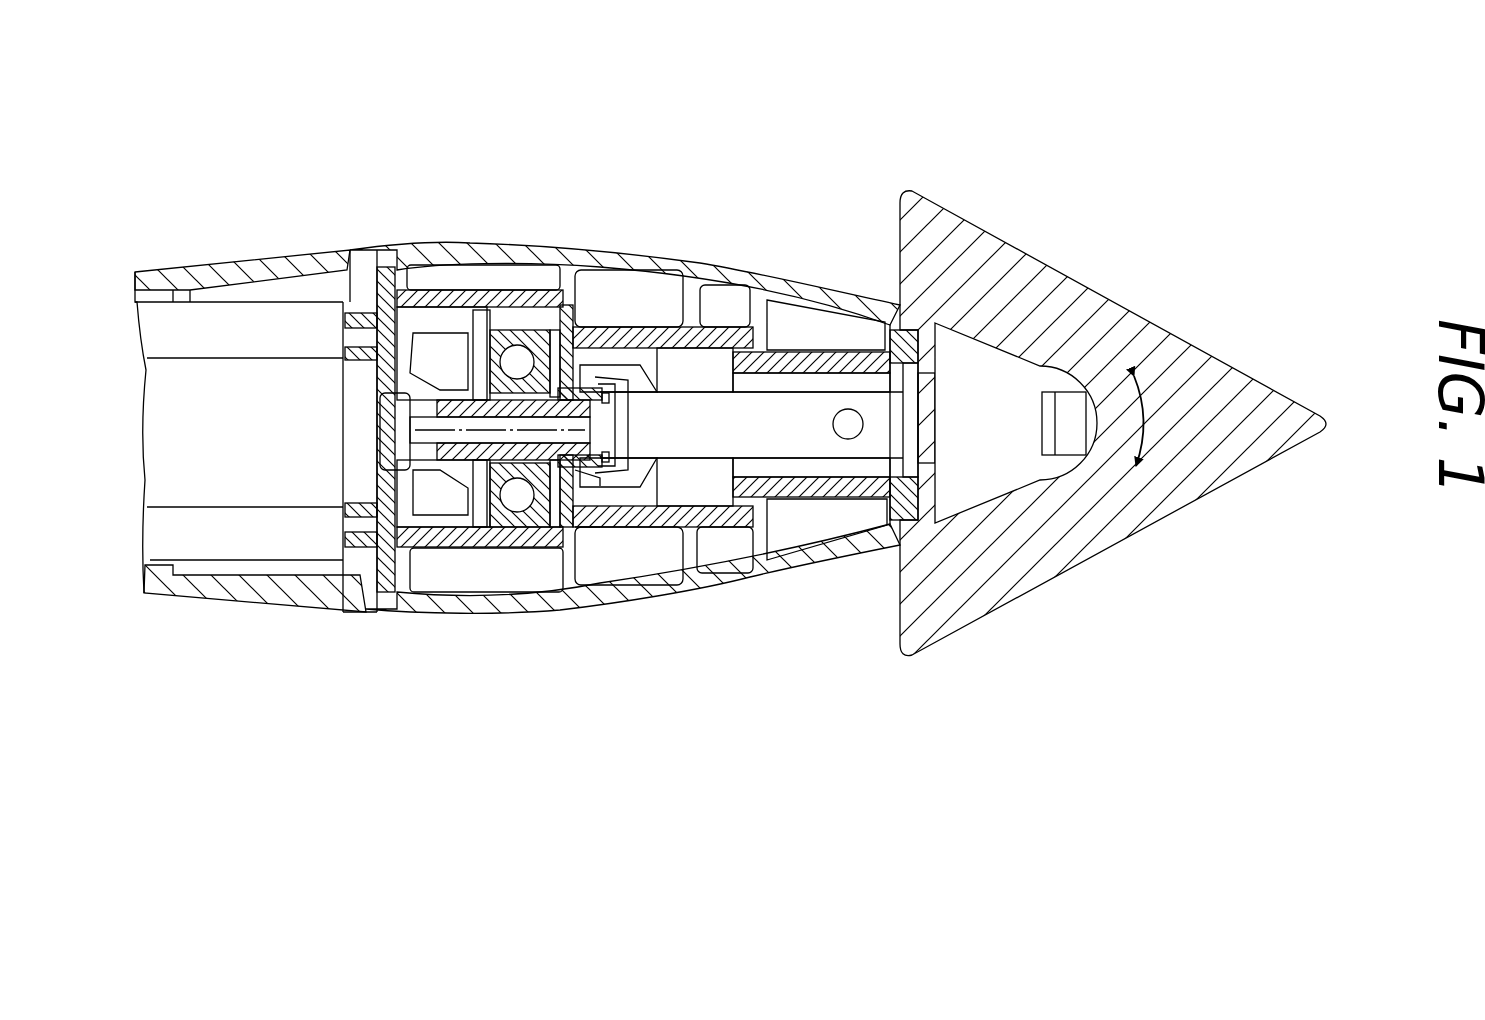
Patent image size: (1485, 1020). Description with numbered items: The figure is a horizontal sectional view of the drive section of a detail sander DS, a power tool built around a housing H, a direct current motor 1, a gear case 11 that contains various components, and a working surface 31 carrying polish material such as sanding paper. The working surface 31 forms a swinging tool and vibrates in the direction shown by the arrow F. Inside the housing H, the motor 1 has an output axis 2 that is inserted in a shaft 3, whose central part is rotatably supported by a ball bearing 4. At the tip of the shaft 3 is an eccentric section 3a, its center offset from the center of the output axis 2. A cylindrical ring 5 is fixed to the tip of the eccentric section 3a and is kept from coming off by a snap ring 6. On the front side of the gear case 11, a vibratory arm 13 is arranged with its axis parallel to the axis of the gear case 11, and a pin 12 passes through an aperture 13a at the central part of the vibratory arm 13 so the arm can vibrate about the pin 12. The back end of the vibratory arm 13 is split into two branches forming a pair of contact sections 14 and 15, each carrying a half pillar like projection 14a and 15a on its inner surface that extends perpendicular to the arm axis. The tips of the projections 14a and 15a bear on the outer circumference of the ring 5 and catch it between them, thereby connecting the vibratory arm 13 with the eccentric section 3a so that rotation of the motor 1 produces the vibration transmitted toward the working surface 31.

The direct current motor 1 is at (240, 333).
The output axis 2 is at (423, 550).
The shaft 3 is at (467, 297).
The eccentric section 3a is at (556, 330).
The ball bearing 4 is at (510, 330).
The cylindrical ring 5 is at (560, 527).
The snap ring 6 is at (608, 390).
The gear case 11 is at (435, 275).
The pin 12 is at (846, 409).
The vibratory arm 13 is at (700, 447).
The aperture 13a is at (860, 438).
The contact section 14 is at (643, 365).
The projection 14a is at (597, 372).
The contact section 15 is at (607, 482).
The projection 15a is at (600, 528).
The working surface 31 is at (1140, 349).
The housing H is at (318, 598).
The arrow (vibration direction) F is at (1146, 417).
The detail sander DS is at (728, 149).